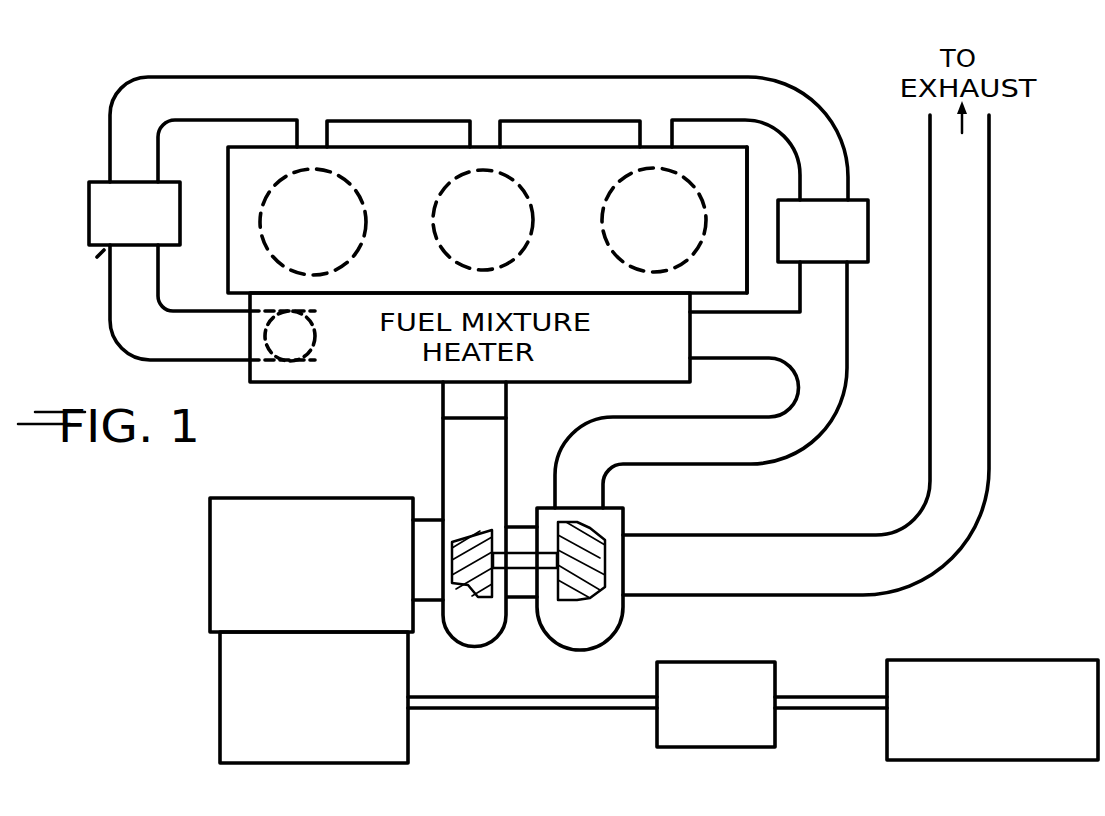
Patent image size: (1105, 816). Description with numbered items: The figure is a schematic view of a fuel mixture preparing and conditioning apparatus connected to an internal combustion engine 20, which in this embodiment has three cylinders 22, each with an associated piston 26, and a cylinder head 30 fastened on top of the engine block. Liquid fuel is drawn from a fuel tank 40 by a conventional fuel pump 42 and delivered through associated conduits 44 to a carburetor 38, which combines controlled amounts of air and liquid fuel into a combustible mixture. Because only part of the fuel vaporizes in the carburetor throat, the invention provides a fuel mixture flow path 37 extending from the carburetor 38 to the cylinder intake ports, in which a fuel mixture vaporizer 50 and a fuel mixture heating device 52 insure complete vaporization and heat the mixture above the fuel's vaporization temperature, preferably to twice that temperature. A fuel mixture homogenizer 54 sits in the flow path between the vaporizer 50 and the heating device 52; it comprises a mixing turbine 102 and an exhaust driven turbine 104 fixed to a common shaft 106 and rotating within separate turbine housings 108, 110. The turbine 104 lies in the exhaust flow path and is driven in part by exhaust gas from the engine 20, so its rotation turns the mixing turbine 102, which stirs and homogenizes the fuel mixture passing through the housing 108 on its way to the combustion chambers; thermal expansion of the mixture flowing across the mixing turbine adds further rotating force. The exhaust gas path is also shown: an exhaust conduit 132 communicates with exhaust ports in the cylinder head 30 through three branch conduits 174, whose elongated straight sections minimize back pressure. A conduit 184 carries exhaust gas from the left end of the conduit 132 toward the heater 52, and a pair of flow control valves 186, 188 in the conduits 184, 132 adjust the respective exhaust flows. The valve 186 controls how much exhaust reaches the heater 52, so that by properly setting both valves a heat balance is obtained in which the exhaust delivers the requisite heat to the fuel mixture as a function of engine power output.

The internal combustion engine 20 is at (762, 192).
The cylinders 22 is at (330, 273).
The piston 26 is at (336, 231).
The cylinder head 30 is at (747, 266).
The fuel mixture flow path 37 is at (410, 431).
The carburetor 38 is at (218, 662).
The fuel tank 40 is at (965, 660).
The fuel pump 42 is at (758, 662).
The conduits 44 is at (548, 710).
The fuel mixture vaporizer 50 is at (258, 498).
The fuel mixture heating device 52 is at (534, 383).
The fuel mixture homogenizer 54 is at (572, 662).
The mixing turbine 102 is at (462, 538).
The exhaust driven turbine 104 is at (588, 534).
The common shaft 106 is at (517, 550).
The turbine housing 108 is at (486, 633).
The turbine housing 110 is at (607, 612).
The exhaust conduit 132 is at (466, 77).
The branch conduits 174 is at (340, 141).
The conduit 184 is at (108, 150).
The flow control valve 186 is at (97, 257).
The flow control valve 188 is at (855, 200).